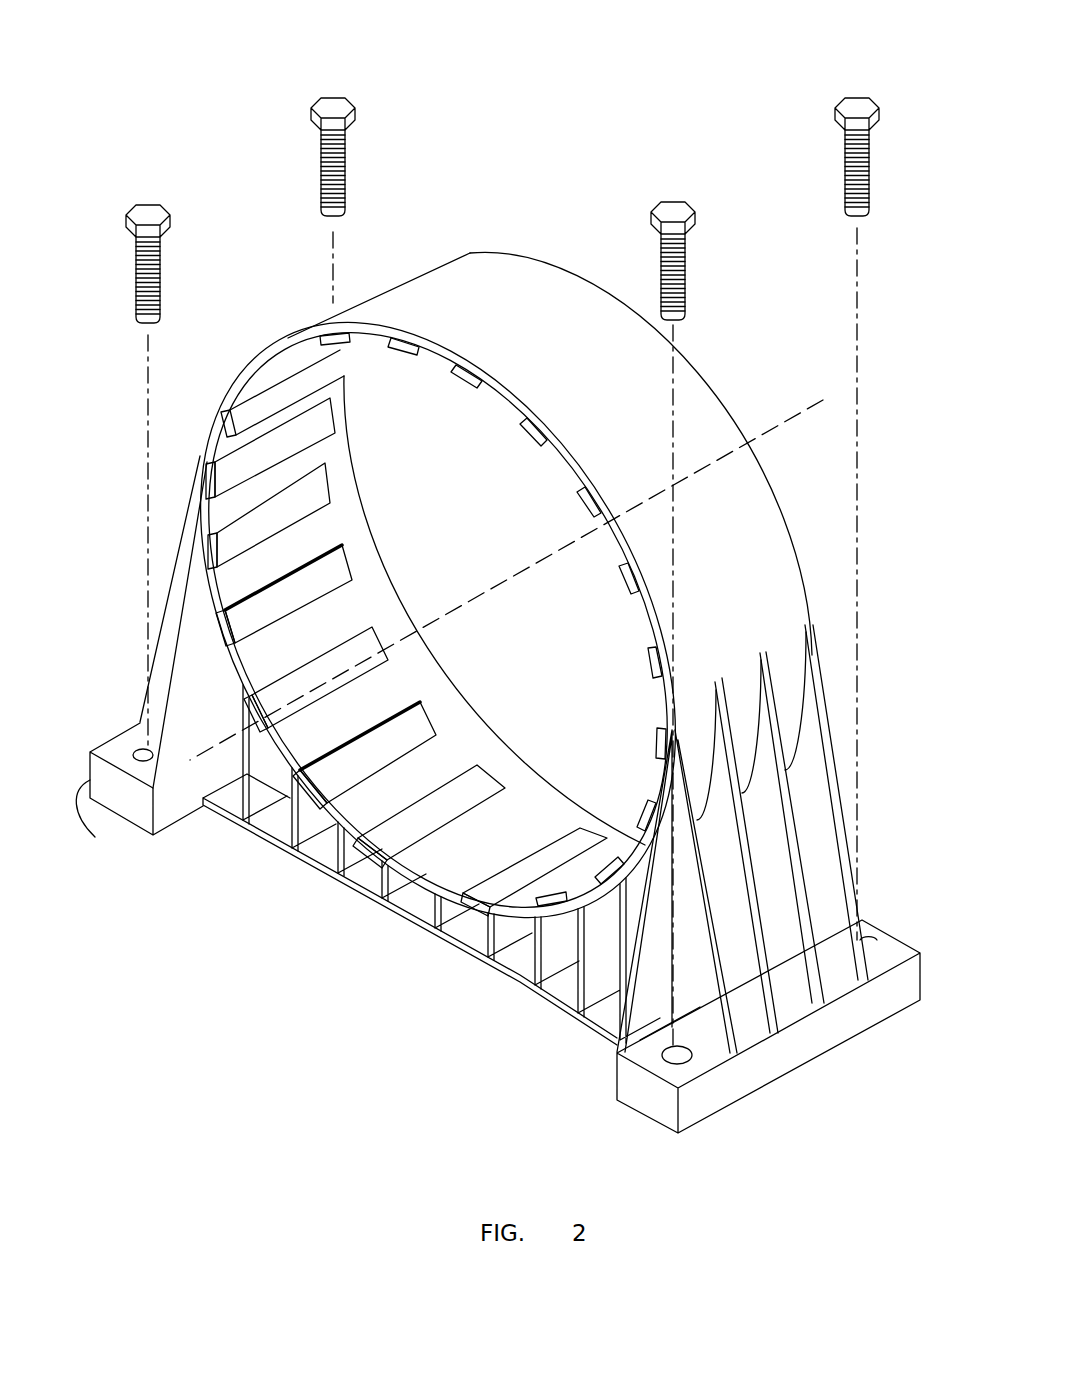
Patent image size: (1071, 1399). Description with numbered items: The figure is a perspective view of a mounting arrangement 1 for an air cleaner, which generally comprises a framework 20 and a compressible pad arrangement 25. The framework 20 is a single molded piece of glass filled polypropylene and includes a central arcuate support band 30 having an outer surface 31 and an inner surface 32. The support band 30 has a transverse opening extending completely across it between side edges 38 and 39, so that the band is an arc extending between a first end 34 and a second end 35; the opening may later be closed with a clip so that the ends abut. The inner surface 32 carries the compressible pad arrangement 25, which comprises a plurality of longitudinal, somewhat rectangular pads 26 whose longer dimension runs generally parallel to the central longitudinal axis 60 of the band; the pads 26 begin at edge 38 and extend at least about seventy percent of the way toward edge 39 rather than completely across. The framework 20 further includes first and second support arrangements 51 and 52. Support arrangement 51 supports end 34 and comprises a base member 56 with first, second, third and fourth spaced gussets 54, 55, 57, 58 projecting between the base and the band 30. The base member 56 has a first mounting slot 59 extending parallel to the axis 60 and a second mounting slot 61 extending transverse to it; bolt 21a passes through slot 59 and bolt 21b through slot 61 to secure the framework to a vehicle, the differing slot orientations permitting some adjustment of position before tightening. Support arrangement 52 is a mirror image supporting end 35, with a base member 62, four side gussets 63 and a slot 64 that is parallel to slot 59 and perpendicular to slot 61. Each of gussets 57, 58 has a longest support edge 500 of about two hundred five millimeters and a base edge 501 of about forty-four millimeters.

The mounting arrangement 1 is at (470, 122).
The framework 20 is at (244, 690).
The bolt 21a is at (862, 110).
The bolt 21b is at (673, 212).
The compressible pad arrangement 25 is at (413, 586).
The pads 26 is at (320, 490).
The central arcuate support band 30 is at (747, 590).
The outer surface 31 is at (512, 283).
The inner surface 32 is at (335, 382).
The first end 34 is at (440, 940).
The second end 35 is at (430, 933).
The side edge 38 is at (413, 882).
The side edge 39 is at (553, 786).
The first support arrangement 51 is at (747, 1033).
The second support arrangement 52 is at (113, 733).
The first gusset 54 is at (713, 1033).
The second gusset 55 is at (790, 1017).
The base member 56 is at (757, 1003).
The third gusset 57 is at (800, 973).
The fourth gusset 58 is at (845, 953).
The first mounting slot 59 is at (875, 940).
The central longitudinal axis 60 is at (788, 413).
The second mounting slot 61 is at (668, 1058).
The base member 62 is at (95, 826).
The side gussets 63 is at (152, 645).
The slot 64 is at (143, 762).
The longest support edge 500 is at (833, 748).
The base edge 501 is at (692, 1033).